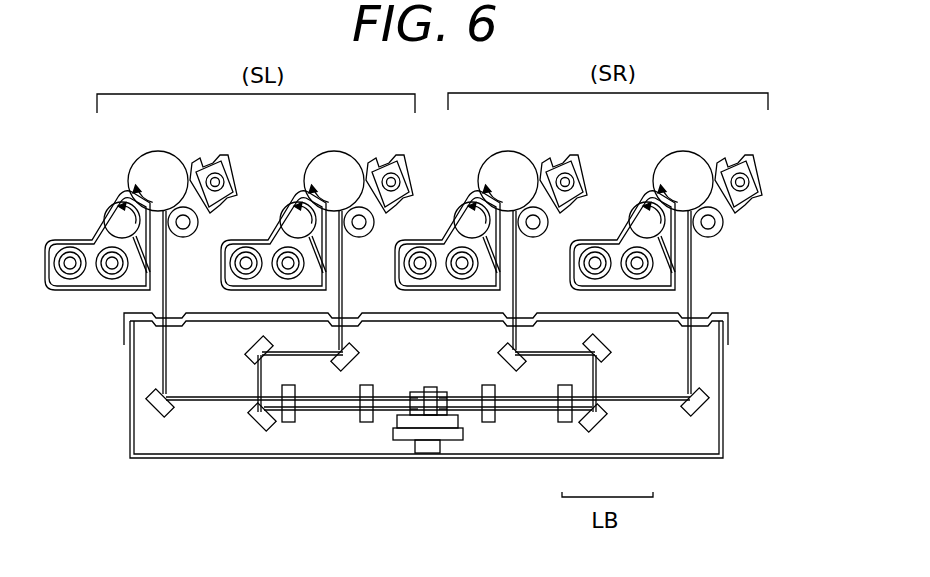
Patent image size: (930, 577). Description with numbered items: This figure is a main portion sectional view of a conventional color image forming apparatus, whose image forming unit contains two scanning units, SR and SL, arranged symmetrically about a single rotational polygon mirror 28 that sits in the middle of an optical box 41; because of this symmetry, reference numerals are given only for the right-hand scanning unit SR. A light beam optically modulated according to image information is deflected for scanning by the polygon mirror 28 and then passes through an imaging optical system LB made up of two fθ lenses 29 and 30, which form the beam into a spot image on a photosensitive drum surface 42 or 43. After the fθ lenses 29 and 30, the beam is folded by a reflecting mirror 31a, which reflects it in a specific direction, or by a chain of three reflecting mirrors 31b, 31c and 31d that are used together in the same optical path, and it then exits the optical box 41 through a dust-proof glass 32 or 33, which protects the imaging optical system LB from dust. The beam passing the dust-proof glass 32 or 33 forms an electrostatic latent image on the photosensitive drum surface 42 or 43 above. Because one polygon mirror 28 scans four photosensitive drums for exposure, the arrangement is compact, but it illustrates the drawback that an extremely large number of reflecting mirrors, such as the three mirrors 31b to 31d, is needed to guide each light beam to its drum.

The rotational polygon mirror 28 is at (437, 413).
The fθ lens 29 is at (487, 385).
The fθ lens 30 is at (566, 423).
The reflecting mirror 31a is at (706, 404).
The reflecting mirror 31b is at (608, 424).
The reflecting mirror 31c is at (609, 351).
The reflecting mirror 31d is at (525, 367).
The dust-proof glass 32 is at (703, 309).
The dust-proof glass 33 is at (521, 309).
The optical box 41 is at (725, 443).
The photosensitive drum surface 42 is at (703, 150).
The photosensitive drum surface 43 is at (528, 150).